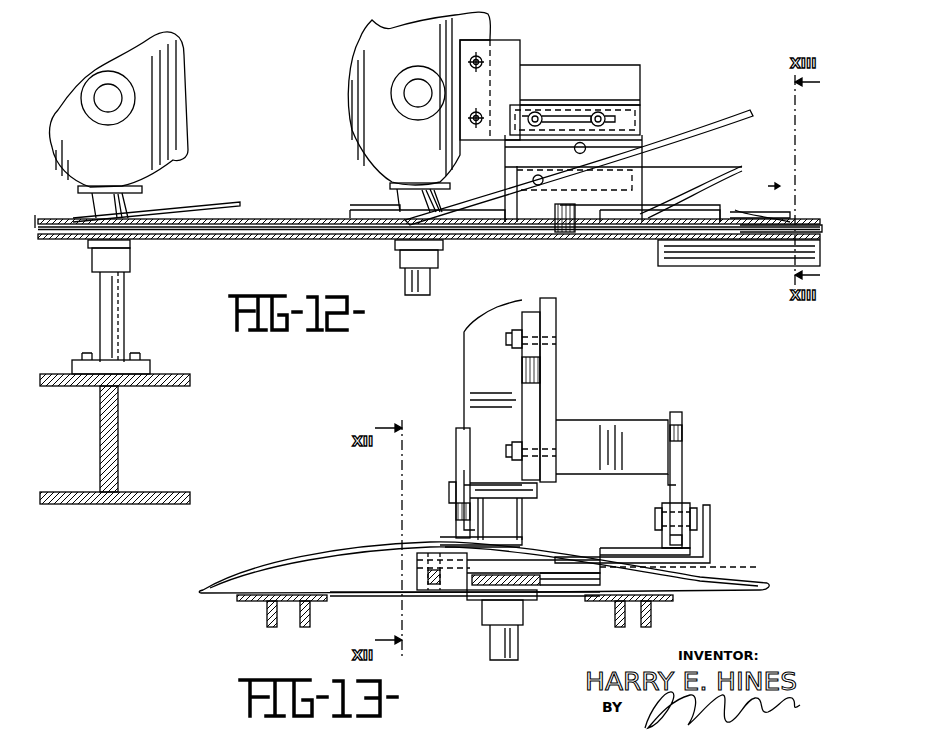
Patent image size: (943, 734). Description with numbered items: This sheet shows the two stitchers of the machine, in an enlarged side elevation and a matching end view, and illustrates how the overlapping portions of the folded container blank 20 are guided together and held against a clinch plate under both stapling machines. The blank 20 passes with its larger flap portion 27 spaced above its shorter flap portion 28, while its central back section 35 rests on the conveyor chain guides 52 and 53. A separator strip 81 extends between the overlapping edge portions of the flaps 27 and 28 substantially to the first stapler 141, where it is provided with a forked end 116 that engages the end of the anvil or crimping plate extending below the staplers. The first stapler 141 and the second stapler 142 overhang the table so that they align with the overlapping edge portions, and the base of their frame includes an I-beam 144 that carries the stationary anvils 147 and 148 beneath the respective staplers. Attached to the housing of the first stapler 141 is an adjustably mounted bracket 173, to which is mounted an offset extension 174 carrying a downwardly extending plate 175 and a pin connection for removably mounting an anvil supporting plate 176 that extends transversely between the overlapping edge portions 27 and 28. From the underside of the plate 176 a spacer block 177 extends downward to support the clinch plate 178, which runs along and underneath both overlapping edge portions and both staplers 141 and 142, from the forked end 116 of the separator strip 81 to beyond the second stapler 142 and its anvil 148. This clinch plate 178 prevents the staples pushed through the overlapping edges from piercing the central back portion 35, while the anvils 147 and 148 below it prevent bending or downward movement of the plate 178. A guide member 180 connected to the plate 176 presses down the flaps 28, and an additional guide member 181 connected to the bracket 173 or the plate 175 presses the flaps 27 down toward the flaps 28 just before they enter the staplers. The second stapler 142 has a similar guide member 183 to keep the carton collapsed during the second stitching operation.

In FIG. 13, the container blank 20 is at (264, 562).
In FIG. 12, the larger flap portion 27 is at (262, 218).
In FIG. 13, the larger flap portion 27 is at (384, 562).
In FIG. 12, the shorter flap portion 28 is at (328, 226).
In FIG. 13, the shorter flap portion 28 is at (580, 565).
In FIG. 12, the central back section 35 is at (272, 247).
In FIG. 13, the central back section 35 is at (342, 600).
In FIG. 13, the conveyor chain guide 52 is at (630, 626).
In FIG. 12, the conveyor chain guide 53 is at (690, 263).
In FIG. 13, the conveyor chain guide 53 is at (285, 624).
In FIG. 12, the separator strip 81 is at (808, 224).
In FIG. 13, the separator strip 81 is at (530, 578).
In FIG. 12, the forked end 116 is at (756, 216).
In FIG. 12, the first stapler 141 is at (486, 24).
In FIG. 13, the first stapler 141 is at (470, 374).
In FIG. 12, the second stapler 142 is at (182, 46).
In FIG. 12, the I-beam 144 is at (194, 346).
In FIG. 12, the anvil 147 is at (428, 279).
In FIG. 13, the anvil 147 is at (524, 622).
In FIG. 12, the anvil 148 is at (120, 300).
In FIG. 13, the anvil 148 is at (515, 652).
In FIG. 12, the bracket 173 is at (520, 60).
In FIG. 13, the bracket 173 is at (540, 378).
In FIG. 13, the offset extension 174 is at (650, 408).
In FIG. 12, the downwardly extending plate 175 is at (632, 154).
In FIG. 13, the downwardly extending plate 175 is at (684, 456).
In FIG. 12, the anvil supporting plate 176 is at (628, 228).
In FIG. 13, the anvil supporting plate 176 is at (540, 572).
In FIG. 12, the spacer block 177 is at (575, 240).
In FIG. 13, the spacer block 177 is at (462, 576).
In FIG. 12, the clinch plate 178 is at (350, 238).
In FIG. 13, the clinch plate 178 is at (428, 592).
In FIG. 12, the guide member 180 is at (712, 172).
In FIG. 13, the guide member 180 is at (712, 512).
In FIG. 12, the guide member 181 is at (708, 108).
In FIG. 13, the guide member 181 is at (458, 452).
In FIG. 12, the guide member 183 is at (208, 208).